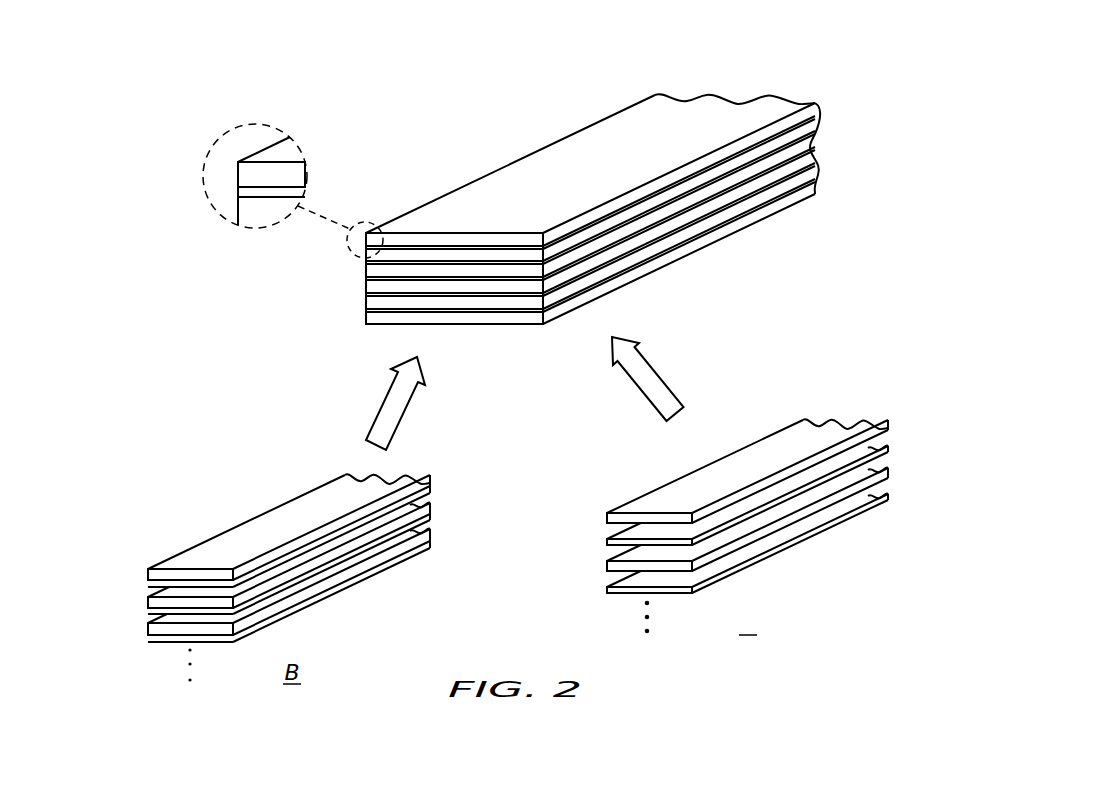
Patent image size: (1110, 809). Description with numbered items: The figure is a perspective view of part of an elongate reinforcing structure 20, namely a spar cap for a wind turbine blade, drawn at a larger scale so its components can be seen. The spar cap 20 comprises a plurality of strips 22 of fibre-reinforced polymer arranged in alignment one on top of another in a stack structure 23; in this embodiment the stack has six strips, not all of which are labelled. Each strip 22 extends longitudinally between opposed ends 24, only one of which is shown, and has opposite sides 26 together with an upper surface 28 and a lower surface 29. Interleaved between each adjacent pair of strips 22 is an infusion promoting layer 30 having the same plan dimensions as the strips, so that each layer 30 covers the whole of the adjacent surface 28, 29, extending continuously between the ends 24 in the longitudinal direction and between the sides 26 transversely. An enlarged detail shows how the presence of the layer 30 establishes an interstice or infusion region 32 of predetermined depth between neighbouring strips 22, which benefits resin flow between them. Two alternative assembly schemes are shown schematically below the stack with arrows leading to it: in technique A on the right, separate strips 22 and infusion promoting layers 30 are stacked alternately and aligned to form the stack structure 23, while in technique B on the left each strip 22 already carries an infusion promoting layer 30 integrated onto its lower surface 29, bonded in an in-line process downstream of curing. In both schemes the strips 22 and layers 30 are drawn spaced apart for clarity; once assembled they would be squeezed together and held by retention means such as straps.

The elongate reinforcing structure 20 is at (852, 155).
The strip 22 is at (802, 182).
The stack structure 23 is at (519, 176).
The end 24 is at (447, 232).
The side 26 is at (601, 121).
The upper surface 28 is at (283, 162).
The lower surface 29 is at (258, 200).
The infusion promoting layer 30 is at (657, 243).
The infusion region 32 is at (282, 201).